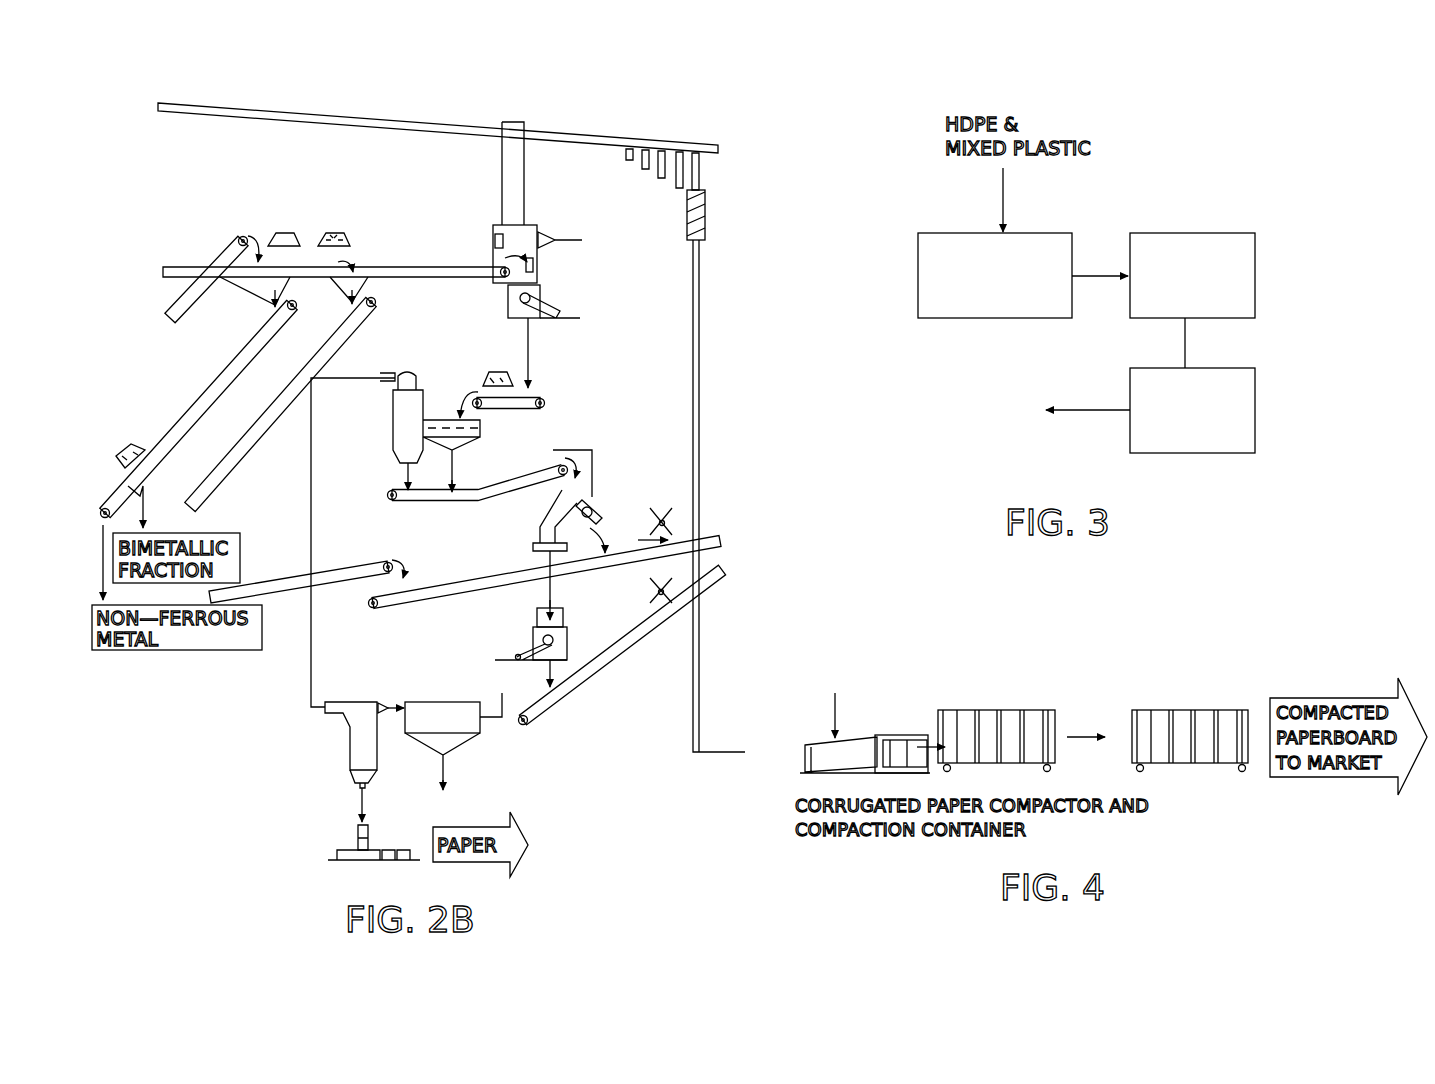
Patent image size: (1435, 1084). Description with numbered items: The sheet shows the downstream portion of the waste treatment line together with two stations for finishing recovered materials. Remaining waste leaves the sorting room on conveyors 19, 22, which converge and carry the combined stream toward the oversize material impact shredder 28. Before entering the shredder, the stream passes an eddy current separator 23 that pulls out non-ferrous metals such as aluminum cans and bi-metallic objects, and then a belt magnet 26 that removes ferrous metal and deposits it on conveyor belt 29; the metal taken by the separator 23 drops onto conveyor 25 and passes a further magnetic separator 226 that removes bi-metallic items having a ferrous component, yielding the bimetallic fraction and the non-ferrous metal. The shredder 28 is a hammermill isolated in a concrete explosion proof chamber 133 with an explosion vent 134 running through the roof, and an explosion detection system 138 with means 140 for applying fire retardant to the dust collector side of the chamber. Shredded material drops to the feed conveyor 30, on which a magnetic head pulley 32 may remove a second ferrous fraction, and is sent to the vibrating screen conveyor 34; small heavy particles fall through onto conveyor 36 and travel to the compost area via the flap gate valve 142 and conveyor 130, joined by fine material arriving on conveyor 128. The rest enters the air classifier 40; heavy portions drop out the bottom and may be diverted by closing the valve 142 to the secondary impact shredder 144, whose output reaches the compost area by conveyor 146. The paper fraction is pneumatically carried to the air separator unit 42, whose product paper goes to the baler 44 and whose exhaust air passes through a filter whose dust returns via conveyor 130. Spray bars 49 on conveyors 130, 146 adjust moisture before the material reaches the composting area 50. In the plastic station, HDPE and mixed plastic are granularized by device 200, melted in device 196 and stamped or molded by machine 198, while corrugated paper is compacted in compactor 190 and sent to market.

In FIG. 2B, the conveyor 19 is at (230, 258).
In FIG. 2B, the conveyor 22 is at (215, 267).
In FIG. 2B, the eddy current separator 23 is at (285, 234).
In FIG. 2B, the conveyor 25 is at (220, 388).
In FIG. 2B, the belt magnet 26 is at (332, 233).
In FIG. 2B, the oversize material impact shredder 28 is at (523, 293).
In FIG. 2B, the conveyor belt 29 is at (272, 405).
In FIG. 2B, the feed conveyor 30 is at (535, 395).
In FIG. 2B, the magnetic head pulley 32 is at (497, 372).
In FIG. 2B, the vibrating screen conveyor 34 is at (445, 418).
In FIG. 2B, the conveyor 36 is at (495, 492).
In FIG. 2B, the air classifier 40 is at (393, 430).
In FIG. 2B, the air separator unit 42 is at (358, 708).
In FIG. 2B, the baler 44 is at (358, 850).
In FIG. 2B, the spray bars 49 is at (663, 520).
In FIG. 2B, the composting area 50 is at (753, 534).
In FIG. 2B, the conveyor 128 is at (272, 591).
In FIG. 2B, the conveyor 130 is at (463, 585).
In FIG. 2B, the concrete explosion proof chamber 133 is at (505, 310).
In FIG. 2B, the explosion vent 134 is at (524, 196).
In FIG. 2B, the explosion detection system 138 is at (533, 263).
In FIG. 2B, the means for applying a fire retardant 140 is at (495, 245).
In FIG. 2B, the flap gate valve 142 is at (590, 498).
In FIG. 2B, the secondary impact shredder 144 is at (567, 632).
In FIG. 2B, the conveyor 146 is at (608, 658).
In FIG. 4, the compactor 190 is at (908, 735).
In FIG. 3, the melting device 196 is at (1183, 232).
In FIG. 3, the stamping or molding machine 198 is at (1197, 368).
In FIG. 3, the granularizing device 200 is at (1023, 232).
In FIG. 2B, the magnetic separator 226 is at (125, 452).